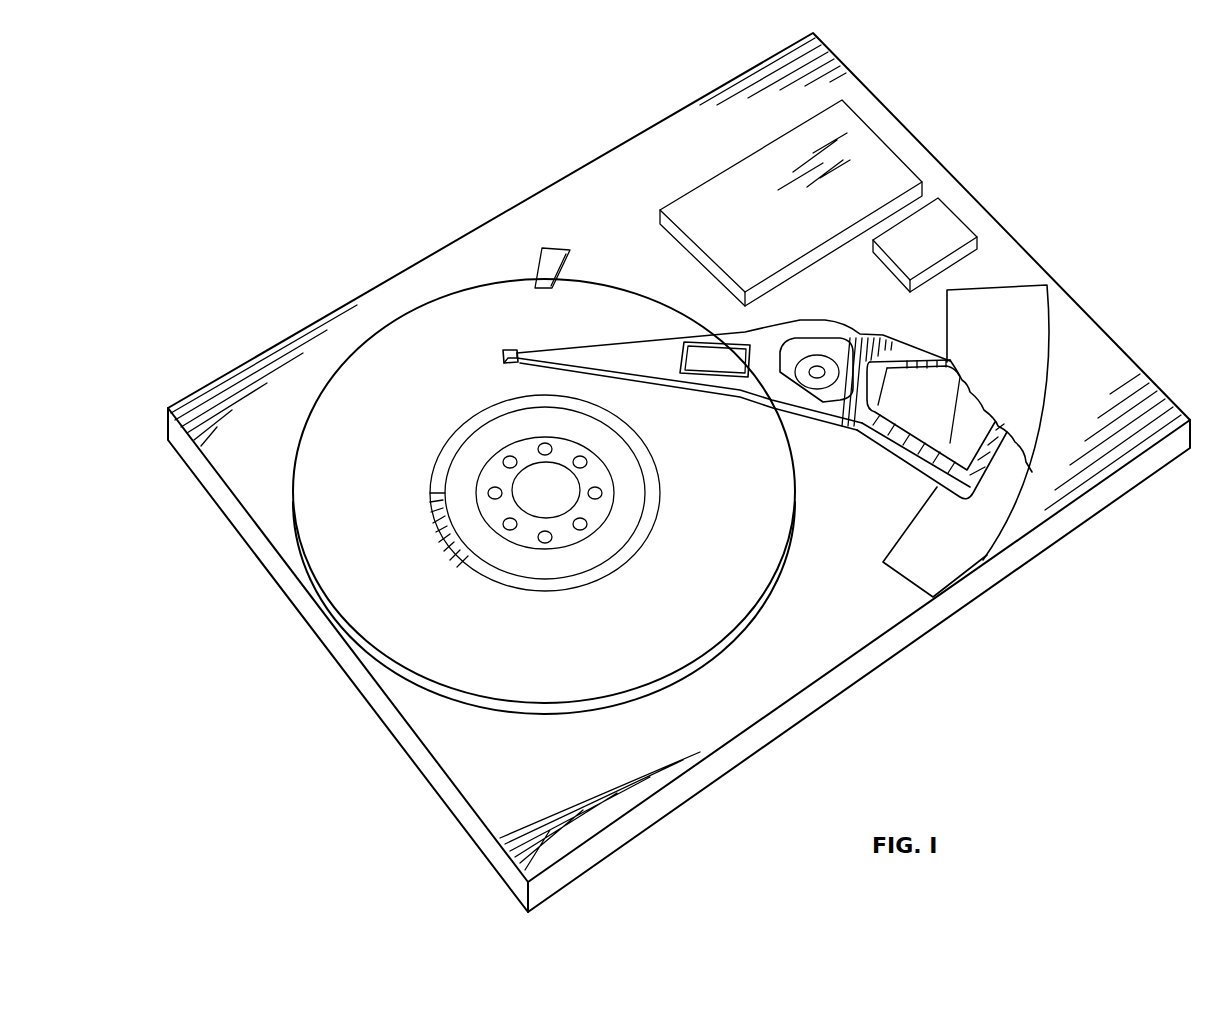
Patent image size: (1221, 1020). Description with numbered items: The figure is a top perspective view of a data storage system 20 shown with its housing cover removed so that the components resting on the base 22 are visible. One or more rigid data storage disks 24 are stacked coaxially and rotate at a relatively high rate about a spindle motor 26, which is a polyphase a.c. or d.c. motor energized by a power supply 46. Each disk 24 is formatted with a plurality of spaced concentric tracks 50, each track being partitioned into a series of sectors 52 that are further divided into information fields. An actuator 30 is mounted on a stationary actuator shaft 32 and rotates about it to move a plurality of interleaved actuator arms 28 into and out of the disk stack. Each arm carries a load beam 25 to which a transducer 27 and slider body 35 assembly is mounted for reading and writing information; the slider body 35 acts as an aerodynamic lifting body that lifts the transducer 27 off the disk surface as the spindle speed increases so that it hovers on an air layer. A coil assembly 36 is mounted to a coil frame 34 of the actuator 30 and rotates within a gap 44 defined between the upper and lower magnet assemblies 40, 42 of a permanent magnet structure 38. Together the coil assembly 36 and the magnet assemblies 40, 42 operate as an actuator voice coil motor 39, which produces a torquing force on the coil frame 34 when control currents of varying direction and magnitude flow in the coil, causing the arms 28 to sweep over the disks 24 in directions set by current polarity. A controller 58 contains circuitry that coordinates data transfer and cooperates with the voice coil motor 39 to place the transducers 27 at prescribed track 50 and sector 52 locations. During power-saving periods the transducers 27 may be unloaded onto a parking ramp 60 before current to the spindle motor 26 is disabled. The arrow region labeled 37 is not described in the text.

The data storage system 20 is at (997, 162).
The base 22 is at (845, 673).
The data storage disk 24 is at (544, 496).
The load beam 25 is at (518, 356).
The spindle motor 26 is at (565, 514).
The transducer 27 is at (503, 362).
The actuator arm 28 is at (653, 365).
The actuator 30 is at (829, 418).
The actuator shaft 32 is at (817, 365).
The coil frame 34 is at (860, 345).
The slider body 35 is at (503, 350).
The coil assembly 36 is at (893, 378).
The actuator assembly 37 is at (812, 422).
The permanent magnet structure 38 is at (1049, 316).
The actuator voice coil motor 39 is at (933, 485).
The upper magnet assembly 40 is at (1037, 368).
The lower magnet assembly 42 is at (903, 563).
The gap 44 is at (1015, 454).
The power supply 46 is at (791, 203).
The track 50 is at (445, 440).
The sector 52 is at (432, 522).
The controller 58 is at (925, 245).
The parking ramp 60 is at (566, 252).